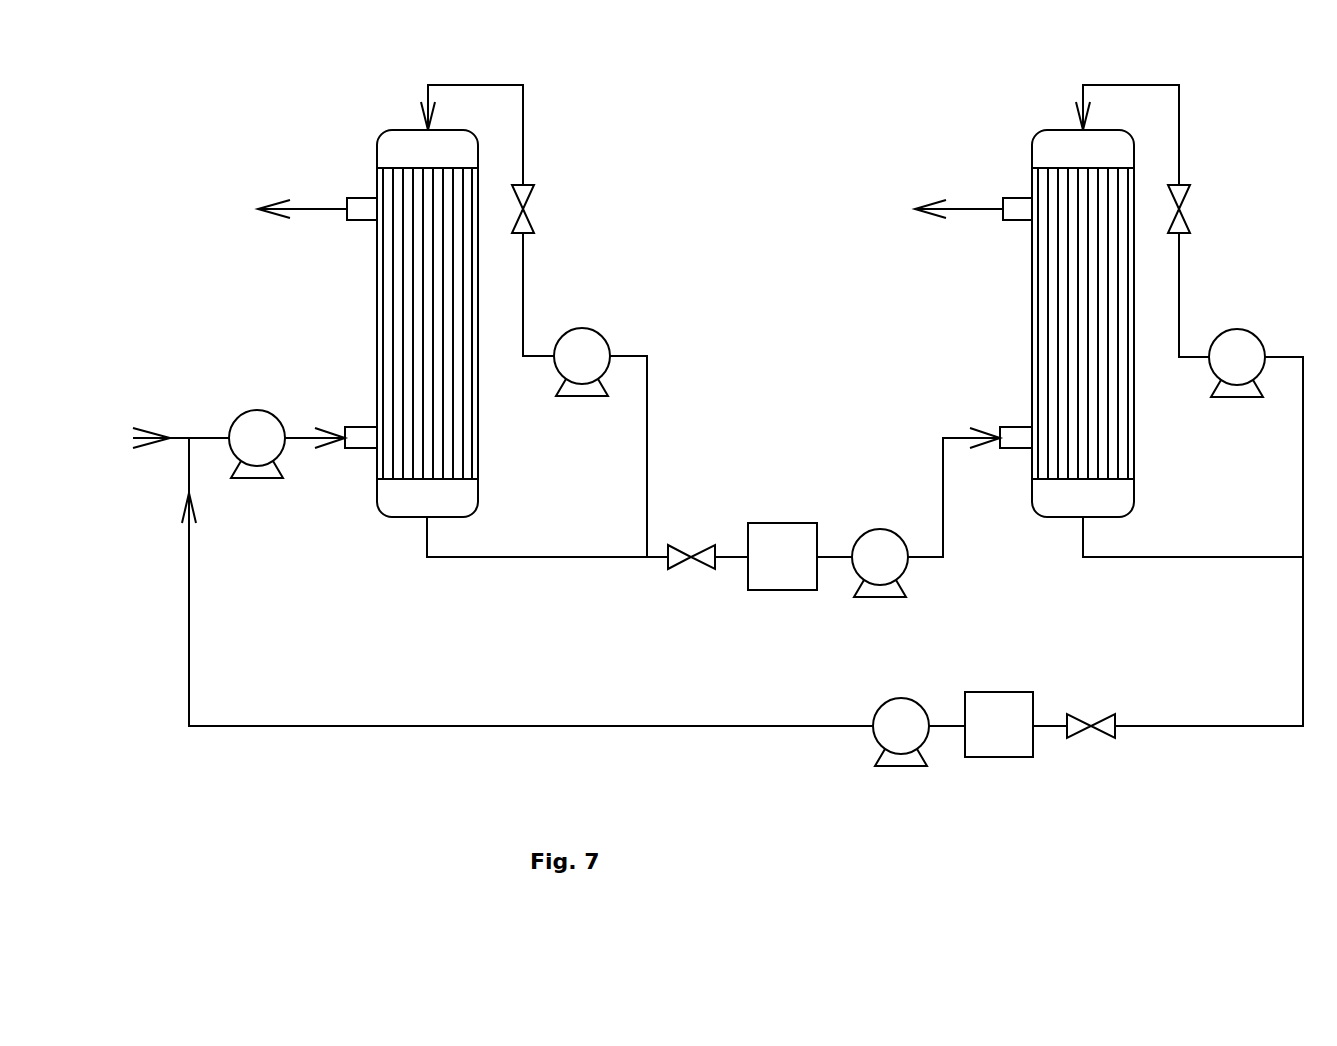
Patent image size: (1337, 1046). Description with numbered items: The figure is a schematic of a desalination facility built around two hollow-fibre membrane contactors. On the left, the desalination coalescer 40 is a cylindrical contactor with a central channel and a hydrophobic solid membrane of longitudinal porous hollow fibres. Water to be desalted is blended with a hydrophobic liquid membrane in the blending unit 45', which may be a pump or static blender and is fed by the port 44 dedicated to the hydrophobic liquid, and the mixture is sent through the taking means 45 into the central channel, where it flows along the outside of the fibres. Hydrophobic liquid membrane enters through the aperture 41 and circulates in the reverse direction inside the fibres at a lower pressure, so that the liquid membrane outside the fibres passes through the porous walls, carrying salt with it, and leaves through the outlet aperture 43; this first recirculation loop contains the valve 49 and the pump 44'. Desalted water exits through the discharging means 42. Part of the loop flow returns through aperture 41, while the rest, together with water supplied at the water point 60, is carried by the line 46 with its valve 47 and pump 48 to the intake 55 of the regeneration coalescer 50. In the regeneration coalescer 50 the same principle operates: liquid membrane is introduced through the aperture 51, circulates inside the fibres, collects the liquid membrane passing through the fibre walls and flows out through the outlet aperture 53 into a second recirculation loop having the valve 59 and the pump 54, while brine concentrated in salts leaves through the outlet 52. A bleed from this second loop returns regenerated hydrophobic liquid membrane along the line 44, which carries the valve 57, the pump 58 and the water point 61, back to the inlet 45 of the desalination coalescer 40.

The desalination coalescer 40 is at (343, 302).
The taking means 41 is at (483, 85).
The discharging means 42 is at (249, 222).
The discharging means 43 is at (522, 557).
The line 44 is at (527, 582).
The pump 44' is at (585, 395).
The taking means 45 is at (255, 415).
The blending unit 45' is at (257, 444).
The line 46 is at (952, 520).
The valve 47 is at (683, 546).
The pump 48 is at (894, 568).
The valve 49 is at (528, 202).
The regeneration coalescer 50 is at (997, 302).
The taking means 51 is at (1137, 85).
The discharging means 52 is at (904, 222).
The outlet aperture 53 is at (1181, 557).
The pump 54 is at (1251, 368).
The taking means 55 is at (960, 438).
The valve 57 is at (1082, 714).
The pump 58 is at (915, 737).
The valve 59 is at (1184, 202).
The water point 60 is at (782, 523).
The water point 61 is at (998, 692).